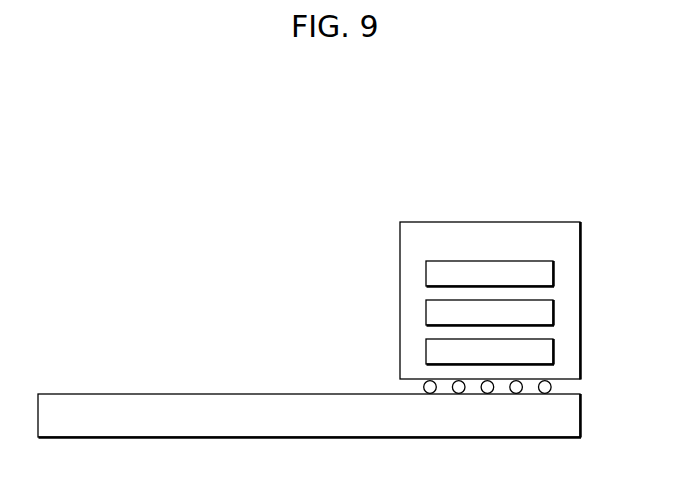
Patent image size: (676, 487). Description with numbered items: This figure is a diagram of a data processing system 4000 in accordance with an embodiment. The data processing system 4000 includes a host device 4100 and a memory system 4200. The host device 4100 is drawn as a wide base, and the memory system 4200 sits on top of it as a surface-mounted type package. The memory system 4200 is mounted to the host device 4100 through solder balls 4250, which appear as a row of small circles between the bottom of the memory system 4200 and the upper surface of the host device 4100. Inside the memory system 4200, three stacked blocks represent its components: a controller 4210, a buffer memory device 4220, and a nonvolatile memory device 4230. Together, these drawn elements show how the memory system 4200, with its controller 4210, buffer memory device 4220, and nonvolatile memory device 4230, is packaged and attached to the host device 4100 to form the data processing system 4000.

The data processing system 4000 is at (82, 193).
The host device 4100 is at (309, 416).
The memory system 4200 is at (490, 301).
The controller 4210 is at (490, 274).
The buffer memory device 4220 is at (490, 313).
The nonvolatile memory device 4230 is at (490, 352).
The solder balls 4250 is at (562, 386).